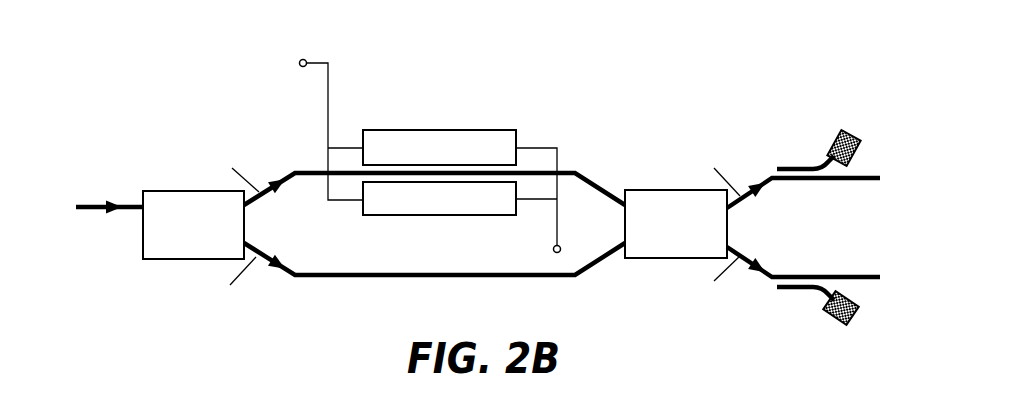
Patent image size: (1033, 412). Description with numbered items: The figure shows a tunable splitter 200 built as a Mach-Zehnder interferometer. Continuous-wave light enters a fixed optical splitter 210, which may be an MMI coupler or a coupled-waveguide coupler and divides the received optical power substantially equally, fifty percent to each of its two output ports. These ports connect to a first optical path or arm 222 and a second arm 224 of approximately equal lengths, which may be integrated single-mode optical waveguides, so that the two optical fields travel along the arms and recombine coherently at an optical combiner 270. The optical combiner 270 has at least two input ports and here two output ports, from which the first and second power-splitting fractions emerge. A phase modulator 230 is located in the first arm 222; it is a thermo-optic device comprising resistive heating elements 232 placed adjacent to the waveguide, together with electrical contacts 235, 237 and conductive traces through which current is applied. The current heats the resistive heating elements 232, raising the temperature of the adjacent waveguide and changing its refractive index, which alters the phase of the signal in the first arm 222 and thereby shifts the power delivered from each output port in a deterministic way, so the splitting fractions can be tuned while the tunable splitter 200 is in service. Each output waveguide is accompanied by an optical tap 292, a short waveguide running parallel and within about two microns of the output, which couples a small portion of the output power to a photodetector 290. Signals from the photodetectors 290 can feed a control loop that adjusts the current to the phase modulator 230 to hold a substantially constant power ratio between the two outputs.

The tunable splitter 200 is at (150, 46).
The fixed optical splitter 210 is at (193, 225).
The first optical path or arm 222 is at (303, 170).
The second arm 224 is at (319, 281).
The phase modulator 230 is at (497, 84).
The resistive heating elements 232 is at (439, 172).
The electrical contact 235 is at (309, 58).
The electrical contact 237 is at (552, 249).
The optical combiner 270 is at (676, 224).
The photodetector 290 is at (828, 137).
The optical tap 292 is at (780, 165).